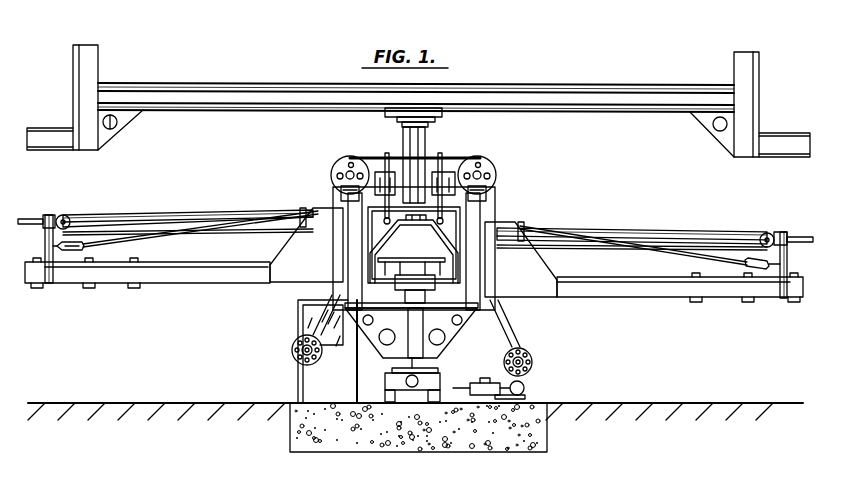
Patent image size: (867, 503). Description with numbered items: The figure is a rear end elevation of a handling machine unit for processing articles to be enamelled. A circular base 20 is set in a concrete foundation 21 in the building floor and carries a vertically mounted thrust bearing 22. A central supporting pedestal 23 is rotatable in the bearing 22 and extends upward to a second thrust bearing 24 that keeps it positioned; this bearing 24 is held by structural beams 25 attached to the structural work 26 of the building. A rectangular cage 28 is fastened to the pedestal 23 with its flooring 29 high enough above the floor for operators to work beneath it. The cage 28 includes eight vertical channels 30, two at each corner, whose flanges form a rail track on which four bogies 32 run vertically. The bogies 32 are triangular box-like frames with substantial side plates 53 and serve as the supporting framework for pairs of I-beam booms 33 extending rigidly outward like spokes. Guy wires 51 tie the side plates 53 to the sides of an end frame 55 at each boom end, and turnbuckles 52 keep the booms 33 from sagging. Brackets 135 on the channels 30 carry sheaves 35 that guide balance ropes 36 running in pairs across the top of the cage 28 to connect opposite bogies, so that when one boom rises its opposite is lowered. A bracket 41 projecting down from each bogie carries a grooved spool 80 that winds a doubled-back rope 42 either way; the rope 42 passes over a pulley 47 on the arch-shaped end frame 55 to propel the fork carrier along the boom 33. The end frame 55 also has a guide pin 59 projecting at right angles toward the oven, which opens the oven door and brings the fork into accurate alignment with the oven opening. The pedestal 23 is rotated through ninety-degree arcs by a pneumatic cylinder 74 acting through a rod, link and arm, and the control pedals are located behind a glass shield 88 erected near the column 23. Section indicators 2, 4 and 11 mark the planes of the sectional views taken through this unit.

The circular base 20 is at (412, 400).
The concrete foundation 21 is at (540, 452).
The thrust bearing 22 is at (447, 376).
The central supporting pedestal 23 is at (428, 144).
The second thrust bearing 24 is at (427, 126).
The structural beams 25 is at (560, 86).
The structural work of a building 26 is at (90, 56).
The rectangular cage 28 is at (474, 288).
The flooring 29 is at (456, 318).
The channels 30 is at (360, 245).
The bogies 32 is at (483, 212).
The I-beam booms 33 is at (200, 284).
The sheaves 35 is at (352, 160).
The brackets 135 is at (338, 172).
The balance ropes 36 is at (390, 154).
The bracket 41 is at (310, 297).
The rope 42 is at (145, 216).
The pulley 47 is at (90, 216).
The guy wires 51 is at (228, 222).
The turnbuckles 52 is at (84, 247).
The side plates 53 is at (290, 248).
The end frame 55 is at (432, 236).
The guide pin 59 is at (58, 215).
The cylinder 74 is at (505, 398).
The grooved spool 80 is at (296, 357).
The glass shield 88 is at (300, 325).
The section line 2- 2 is at (118, 70).
The section line 4- 4 is at (335, 138).
The section line 11- 11 is at (573, 368).